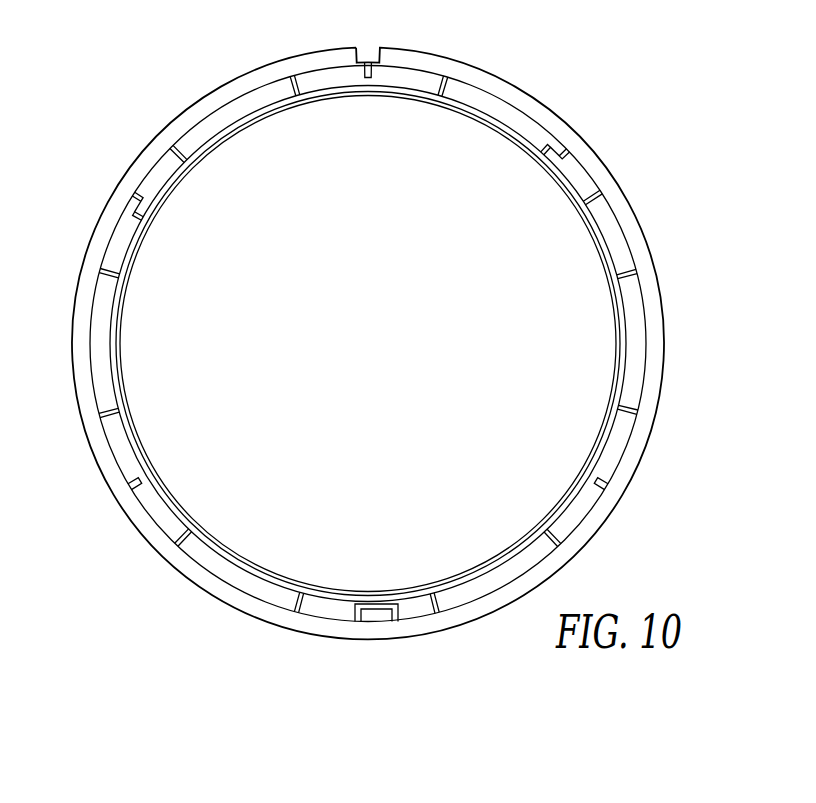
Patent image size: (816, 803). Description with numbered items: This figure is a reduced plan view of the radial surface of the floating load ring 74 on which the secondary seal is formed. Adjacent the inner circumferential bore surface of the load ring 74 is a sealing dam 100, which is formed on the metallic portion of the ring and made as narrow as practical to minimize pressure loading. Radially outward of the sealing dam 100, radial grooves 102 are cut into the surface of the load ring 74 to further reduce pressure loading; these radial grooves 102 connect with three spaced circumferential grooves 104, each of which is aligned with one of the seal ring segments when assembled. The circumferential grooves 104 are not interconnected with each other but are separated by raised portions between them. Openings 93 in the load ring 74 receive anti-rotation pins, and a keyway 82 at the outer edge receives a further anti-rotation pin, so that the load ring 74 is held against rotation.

The floating load ring 74 is at (664, 292).
The keyway 82 is at (358, 47).
The openings 93 is at (369, 62).
The sealing dam 100 is at (524, 148).
The radial grooves 102 is at (567, 160).
The circumferential grooves 104 is at (502, 130).